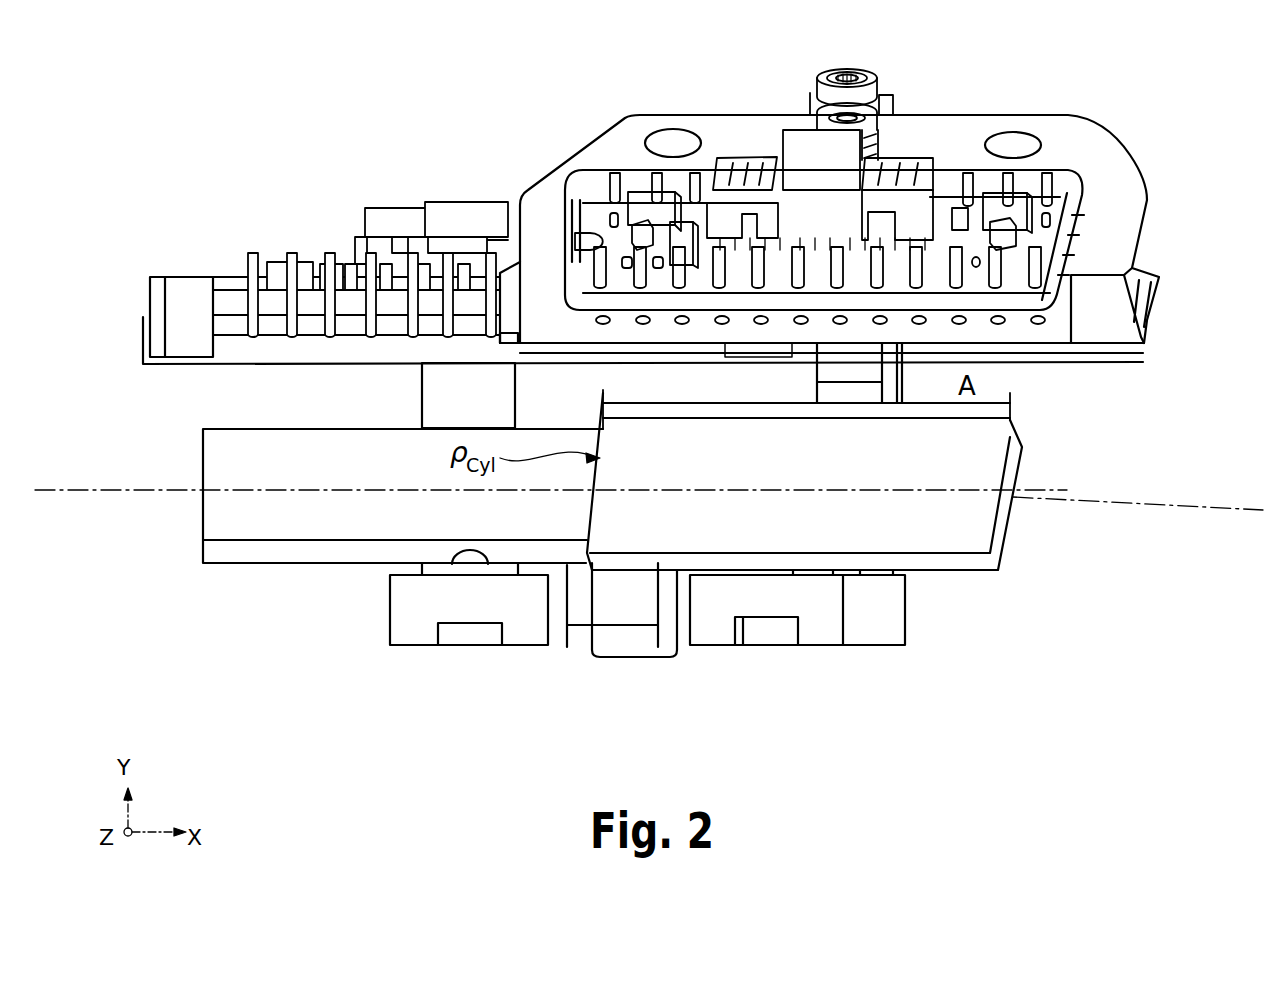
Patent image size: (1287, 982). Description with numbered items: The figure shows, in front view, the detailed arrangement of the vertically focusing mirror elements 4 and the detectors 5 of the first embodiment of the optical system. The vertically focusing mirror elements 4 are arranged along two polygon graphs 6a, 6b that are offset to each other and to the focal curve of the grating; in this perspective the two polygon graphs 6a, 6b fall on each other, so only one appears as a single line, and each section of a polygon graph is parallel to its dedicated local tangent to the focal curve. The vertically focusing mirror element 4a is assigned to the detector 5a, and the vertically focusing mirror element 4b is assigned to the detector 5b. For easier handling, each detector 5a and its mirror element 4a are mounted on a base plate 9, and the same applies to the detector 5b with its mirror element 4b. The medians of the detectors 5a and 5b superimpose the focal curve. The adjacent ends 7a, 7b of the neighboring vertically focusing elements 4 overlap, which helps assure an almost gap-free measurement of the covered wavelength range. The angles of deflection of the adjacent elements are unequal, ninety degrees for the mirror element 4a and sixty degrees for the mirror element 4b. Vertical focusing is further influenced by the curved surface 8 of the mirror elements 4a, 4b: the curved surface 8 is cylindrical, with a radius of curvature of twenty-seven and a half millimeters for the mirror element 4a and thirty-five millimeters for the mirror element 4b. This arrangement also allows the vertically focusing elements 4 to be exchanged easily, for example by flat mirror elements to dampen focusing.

The detectors 5 is at (670, 248).
The detector 5a is at (237, 272).
The detector 5b is at (1085, 165).
The vertically focusing mirror elements 4 is at (563, 547).
The vertically focusing mirror element 4a is at (212, 553).
The vertically focusing mirror element 4b is at (972, 560).
The polygon graph 6a is at (1054, 500).
The polygon graph 6b is at (1072, 487).
The adjacent end of the vertically focusing elements 7a is at (582, 632).
The adjacent end of the vertically focusing elements 7b is at (626, 660).
The curved surface 8 is at (235, 462).
The base plate 9 is at (410, 611).